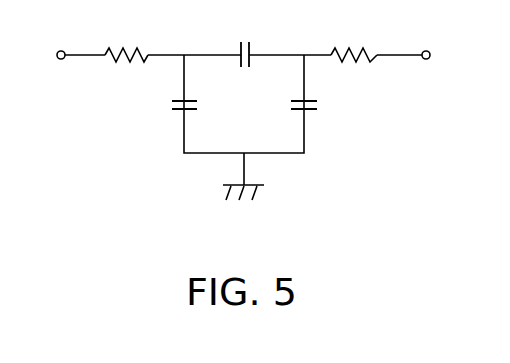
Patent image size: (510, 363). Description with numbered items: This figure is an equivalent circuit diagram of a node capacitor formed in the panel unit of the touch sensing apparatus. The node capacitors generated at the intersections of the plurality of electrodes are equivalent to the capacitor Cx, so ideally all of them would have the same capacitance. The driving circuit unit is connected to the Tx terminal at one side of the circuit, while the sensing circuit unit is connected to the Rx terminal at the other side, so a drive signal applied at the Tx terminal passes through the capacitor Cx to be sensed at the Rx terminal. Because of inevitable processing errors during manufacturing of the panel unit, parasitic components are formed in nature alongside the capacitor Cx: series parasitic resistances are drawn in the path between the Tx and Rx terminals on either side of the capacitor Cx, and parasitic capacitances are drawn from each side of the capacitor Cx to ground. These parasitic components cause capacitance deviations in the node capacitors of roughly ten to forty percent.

The Tx terminal Tx is at (61, 39).
The Rx terminal Rx is at (425, 39).
The capacitor Cx is at (241, 41).